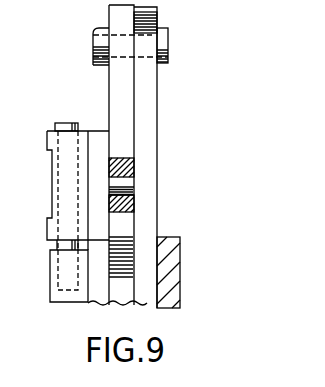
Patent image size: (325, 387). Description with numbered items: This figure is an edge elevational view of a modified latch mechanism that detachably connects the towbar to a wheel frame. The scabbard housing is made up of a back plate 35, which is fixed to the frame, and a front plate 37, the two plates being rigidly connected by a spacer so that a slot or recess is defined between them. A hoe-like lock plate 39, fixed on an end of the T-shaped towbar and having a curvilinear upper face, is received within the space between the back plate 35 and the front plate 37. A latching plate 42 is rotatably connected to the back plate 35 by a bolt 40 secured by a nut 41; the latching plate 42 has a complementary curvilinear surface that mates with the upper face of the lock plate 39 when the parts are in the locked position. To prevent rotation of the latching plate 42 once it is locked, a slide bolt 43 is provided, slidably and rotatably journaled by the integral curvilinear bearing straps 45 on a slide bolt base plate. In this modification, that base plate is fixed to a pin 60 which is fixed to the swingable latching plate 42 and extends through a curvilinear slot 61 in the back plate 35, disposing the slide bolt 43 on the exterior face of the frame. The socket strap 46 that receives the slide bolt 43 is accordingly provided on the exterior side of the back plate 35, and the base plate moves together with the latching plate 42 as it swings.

The back plate 35 is at (108, 93).
The front plate 37 is at (172, 255).
The lock plate 39 is at (147, 297).
The bolt 40 is at (143, 58).
The nut 41 is at (100, 34).
The latching plate 42 is at (147, 125).
The slide bolt 43 is at (62, 248).
The bearing straps 45 is at (63, 142).
The socket strap 46 is at (52, 283).
The pin 60 is at (125, 200).
The curvilinear slot 61 is at (125, 177).